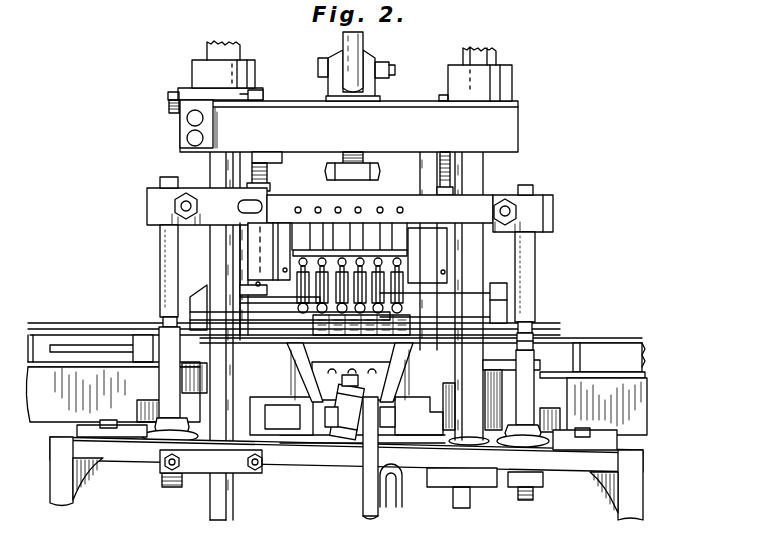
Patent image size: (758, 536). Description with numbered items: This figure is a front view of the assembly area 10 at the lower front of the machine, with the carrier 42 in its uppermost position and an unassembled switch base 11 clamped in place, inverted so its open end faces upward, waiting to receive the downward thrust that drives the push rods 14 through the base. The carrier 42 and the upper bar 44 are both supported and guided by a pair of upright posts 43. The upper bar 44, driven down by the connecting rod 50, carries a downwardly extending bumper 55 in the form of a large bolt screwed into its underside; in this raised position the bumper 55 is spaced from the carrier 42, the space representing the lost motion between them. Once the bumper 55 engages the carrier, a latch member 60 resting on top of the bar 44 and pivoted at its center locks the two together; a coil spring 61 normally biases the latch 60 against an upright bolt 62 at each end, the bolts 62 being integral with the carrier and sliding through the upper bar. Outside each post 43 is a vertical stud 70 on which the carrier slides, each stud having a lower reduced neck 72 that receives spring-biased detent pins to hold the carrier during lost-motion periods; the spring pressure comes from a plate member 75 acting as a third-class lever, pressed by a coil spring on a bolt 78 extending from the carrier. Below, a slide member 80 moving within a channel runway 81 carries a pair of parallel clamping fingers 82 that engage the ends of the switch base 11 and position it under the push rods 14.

The assembly area 10 is at (445, 312).
The switch base 11 is at (633, 350).
The push rod 14 is at (445, 272).
The carrier 42 is at (425, 207).
The upright post 43 is at (213, 163).
The upper bar 44 is at (513, 122).
The connecting rod 50 is at (363, 43).
The bumper 55 is at (353, 173).
The latch member 60 is at (190, 95).
The coil spring 61 is at (167, 100).
The upright bolt 62 is at (260, 97).
The vertical stud 70 is at (160, 242).
The lower reduced neck 72 is at (533, 336).
The plate member 75 is at (528, 208).
The bolt 78 is at (177, 203).
The slide member 80 is at (300, 420).
The channel runway 81 is at (425, 440).
The clamping finger 82 is at (320, 410).